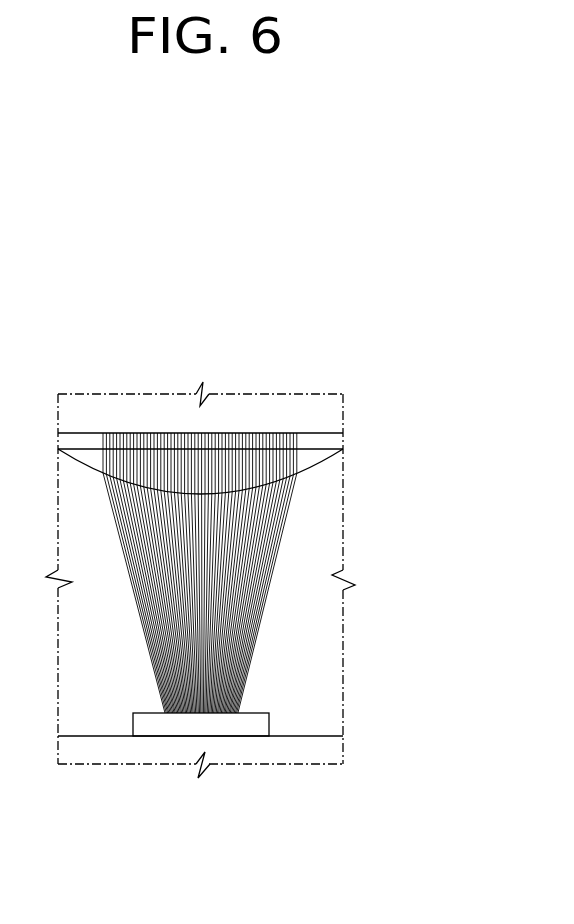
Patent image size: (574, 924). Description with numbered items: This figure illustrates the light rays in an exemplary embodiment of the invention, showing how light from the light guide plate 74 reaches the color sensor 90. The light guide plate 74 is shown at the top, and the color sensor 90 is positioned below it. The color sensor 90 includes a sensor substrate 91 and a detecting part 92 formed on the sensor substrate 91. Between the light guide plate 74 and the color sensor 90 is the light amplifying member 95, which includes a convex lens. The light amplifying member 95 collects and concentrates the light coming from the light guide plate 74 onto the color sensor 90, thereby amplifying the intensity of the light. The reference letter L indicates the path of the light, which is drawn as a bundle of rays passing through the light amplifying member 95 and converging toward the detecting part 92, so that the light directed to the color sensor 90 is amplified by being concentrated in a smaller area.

The light guide plate 74 is at (263, 397).
The light amplifying member 95 is at (343, 450).
The path of the light L is at (265, 562).
The color sensor 90 is at (200, 799).
The sensor substrate 91 is at (155, 756).
The detecting part 92 is at (235, 728).